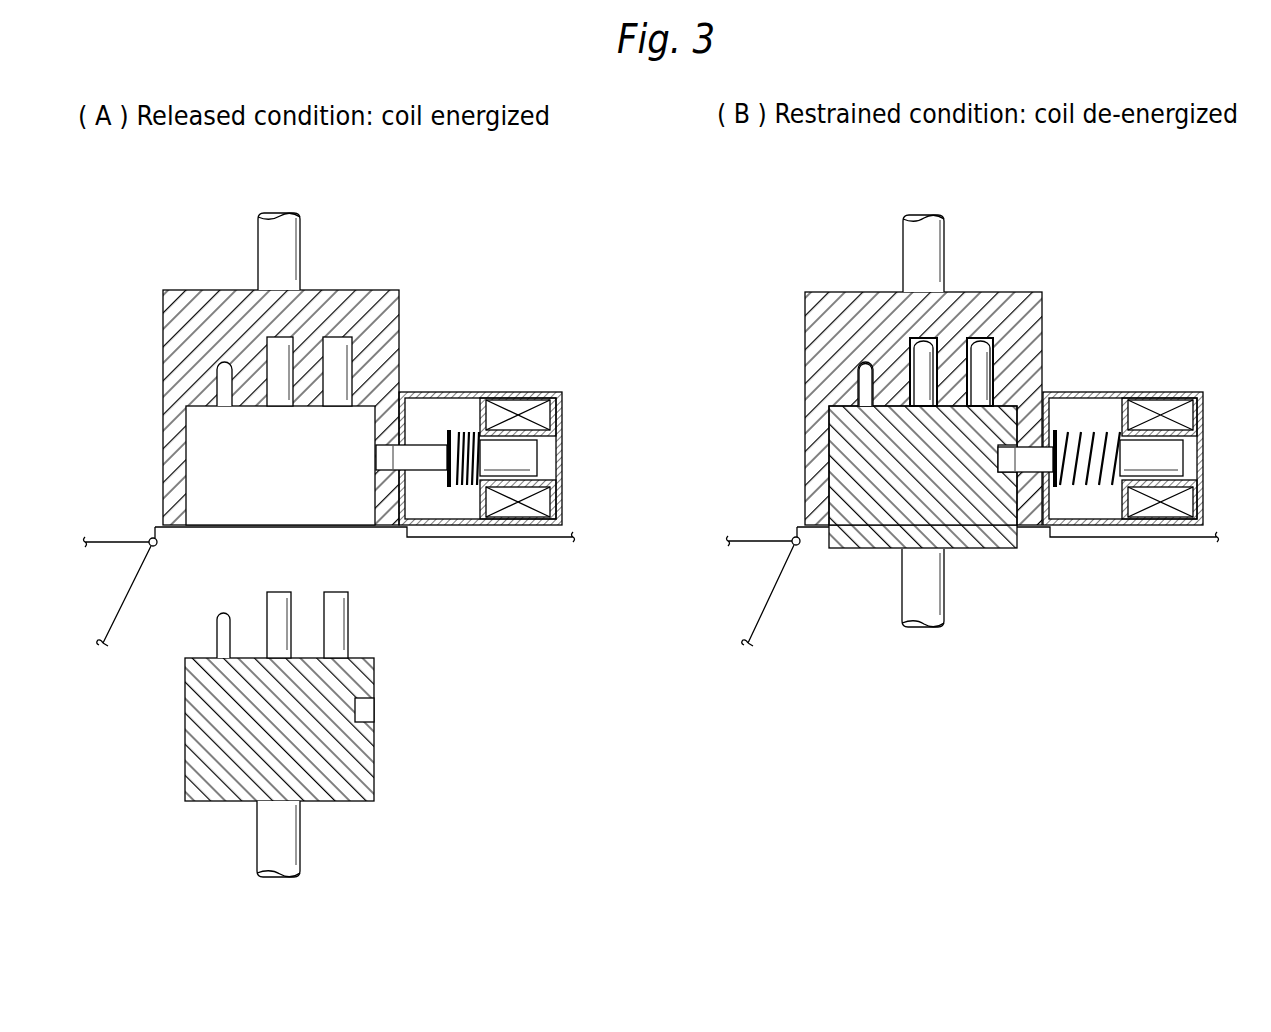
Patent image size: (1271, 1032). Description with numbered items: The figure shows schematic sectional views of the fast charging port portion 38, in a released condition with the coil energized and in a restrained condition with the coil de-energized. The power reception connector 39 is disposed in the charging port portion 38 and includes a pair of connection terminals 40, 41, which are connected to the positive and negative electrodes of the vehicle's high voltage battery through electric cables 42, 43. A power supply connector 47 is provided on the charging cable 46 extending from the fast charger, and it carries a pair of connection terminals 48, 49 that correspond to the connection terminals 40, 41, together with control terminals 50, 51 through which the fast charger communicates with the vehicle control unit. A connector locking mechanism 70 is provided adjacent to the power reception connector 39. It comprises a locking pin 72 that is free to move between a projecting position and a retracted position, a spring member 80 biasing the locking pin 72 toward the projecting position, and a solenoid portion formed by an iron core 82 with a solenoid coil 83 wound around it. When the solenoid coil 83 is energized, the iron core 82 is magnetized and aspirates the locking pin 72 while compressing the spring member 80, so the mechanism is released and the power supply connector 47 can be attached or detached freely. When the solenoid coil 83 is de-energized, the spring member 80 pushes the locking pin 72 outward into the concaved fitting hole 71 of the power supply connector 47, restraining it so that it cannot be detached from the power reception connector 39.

In FIG. 3A, the charging port portion 38 is at (198, 550).
In FIG. 3B, the charging port portion 38 is at (817, 614).
In FIG. 3A, the power reception connector 39 is at (372, 283).
In FIG. 3B, the power reception connector 39 is at (1034, 283).
In FIG. 3A, the connection terminal 40 is at (280, 402).
In FIG. 3B, the connection terminal 40 is at (908, 340).
In FIG. 3A, the connection terminal 41 is at (338, 402).
In FIG. 3B, the connection terminal 41 is at (980, 353).
In FIG. 3A, the electric cable 42 is at (277, 221).
In FIG. 3B, the electric cable 42 is at (920, 222).
In FIG. 3A, the electric cable 43 is at (276, 215).
In FIG. 3B, the electric cable 43 is at (918, 222).
In FIG. 3A, the charging cable 46 is at (270, 860).
In FIG. 3B, the charging cable 46 is at (920, 605).
In FIG. 3A, the power supply connector 47 is at (318, 787).
In FIG. 3B, the power supply connector 47 is at (926, 524).
In FIG. 3A, the connection terminal 48 is at (275, 608).
In FIG. 3B, the connection terminal 48 is at (934, 382).
In FIG. 3A, the connection terminal 49 is at (333, 608).
In FIG. 3B, the connection terminal 49 is at (990, 362).
In FIG. 3A, the control terminal 50 is at (224, 402).
In FIG. 3B, the control terminal 50 is at (856, 368).
In FIG. 3A, the control terminal 51 is at (217, 636).
In FIG. 3B, the control terminal 51 is at (858, 395).
In FIG. 3A, the connector locking mechanism 70 is at (513, 420).
In FIG. 3B, the connector locking mechanism 70 is at (1156, 419).
In FIG. 3A, the fitting hole 71 is at (365, 712).
In FIG. 3B, the fitting hole 71 is at (1002, 475).
In FIG. 3A, the locking pin 72 is at (420, 458).
In FIG. 3B, the locking pin 72 is at (1068, 472).
In FIG. 3A, the spring member 80 is at (463, 430).
In FIG. 3B, the spring member 80 is at (1075, 440).
In FIG. 3A, the iron core 82 is at (548, 458).
In FIG. 3B, the iron core 82 is at (1192, 460).
In FIG. 3A, the solenoid coil 83 is at (518, 403).
In FIG. 3B, the solenoid coil 83 is at (1160, 405).